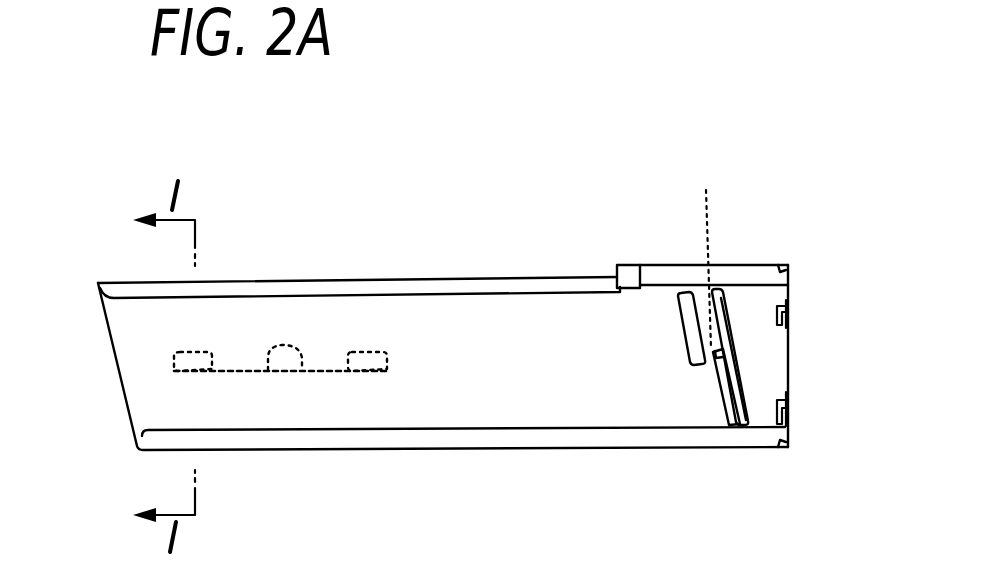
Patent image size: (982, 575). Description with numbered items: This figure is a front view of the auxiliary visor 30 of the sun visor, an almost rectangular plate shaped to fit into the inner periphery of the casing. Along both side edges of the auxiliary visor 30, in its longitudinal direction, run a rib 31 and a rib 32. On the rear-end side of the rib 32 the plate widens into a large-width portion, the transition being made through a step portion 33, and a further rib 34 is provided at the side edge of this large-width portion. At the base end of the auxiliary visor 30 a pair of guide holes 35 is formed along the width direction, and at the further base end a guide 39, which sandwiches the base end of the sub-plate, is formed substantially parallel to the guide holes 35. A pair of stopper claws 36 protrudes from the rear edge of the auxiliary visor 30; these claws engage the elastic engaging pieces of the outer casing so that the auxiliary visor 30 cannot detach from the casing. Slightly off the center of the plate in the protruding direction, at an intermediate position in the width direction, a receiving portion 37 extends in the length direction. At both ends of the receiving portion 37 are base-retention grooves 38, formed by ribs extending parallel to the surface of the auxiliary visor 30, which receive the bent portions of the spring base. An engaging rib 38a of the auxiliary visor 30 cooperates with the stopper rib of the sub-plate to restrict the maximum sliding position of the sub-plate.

The auxiliary visor 30 is at (326, 256).
The rib 31 is at (461, 444).
The rib 32 is at (412, 284).
The step portion 33 is at (615, 272).
The rib 34 is at (677, 273).
The guide holes 35 is at (677, 322).
The stopper claws 36 is at (789, 303).
The receiving portion 37 is at (324, 368).
The base-retention grooves 38 is at (175, 355).
The engaging rib 38a is at (274, 363).
The guide 39 is at (703, 251).